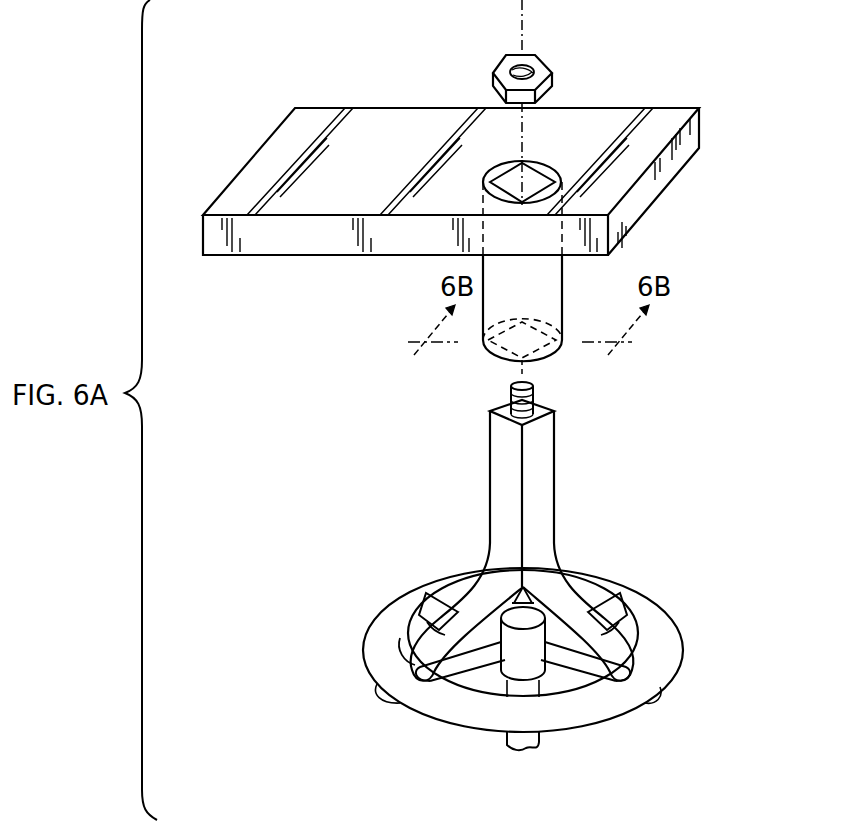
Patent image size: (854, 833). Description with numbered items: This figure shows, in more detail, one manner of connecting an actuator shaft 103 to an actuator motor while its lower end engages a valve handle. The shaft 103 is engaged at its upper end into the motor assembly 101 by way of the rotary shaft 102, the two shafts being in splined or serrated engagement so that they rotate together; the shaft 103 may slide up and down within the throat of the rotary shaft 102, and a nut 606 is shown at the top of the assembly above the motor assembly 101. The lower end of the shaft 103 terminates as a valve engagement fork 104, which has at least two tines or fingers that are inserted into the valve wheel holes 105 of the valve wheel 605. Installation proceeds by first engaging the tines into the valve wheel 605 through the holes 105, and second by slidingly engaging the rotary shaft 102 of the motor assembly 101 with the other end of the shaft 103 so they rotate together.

The nut 606 is at (542, 73).
The motor assembly 101 is at (666, 172).
The rotary shaft 102 is at (543, 313).
The shaft 103 is at (538, 460).
The valve engagement fork 104 is at (666, 687).
The valve wheel holes 105 is at (629, 631).
The valve wheel 605 is at (425, 603).